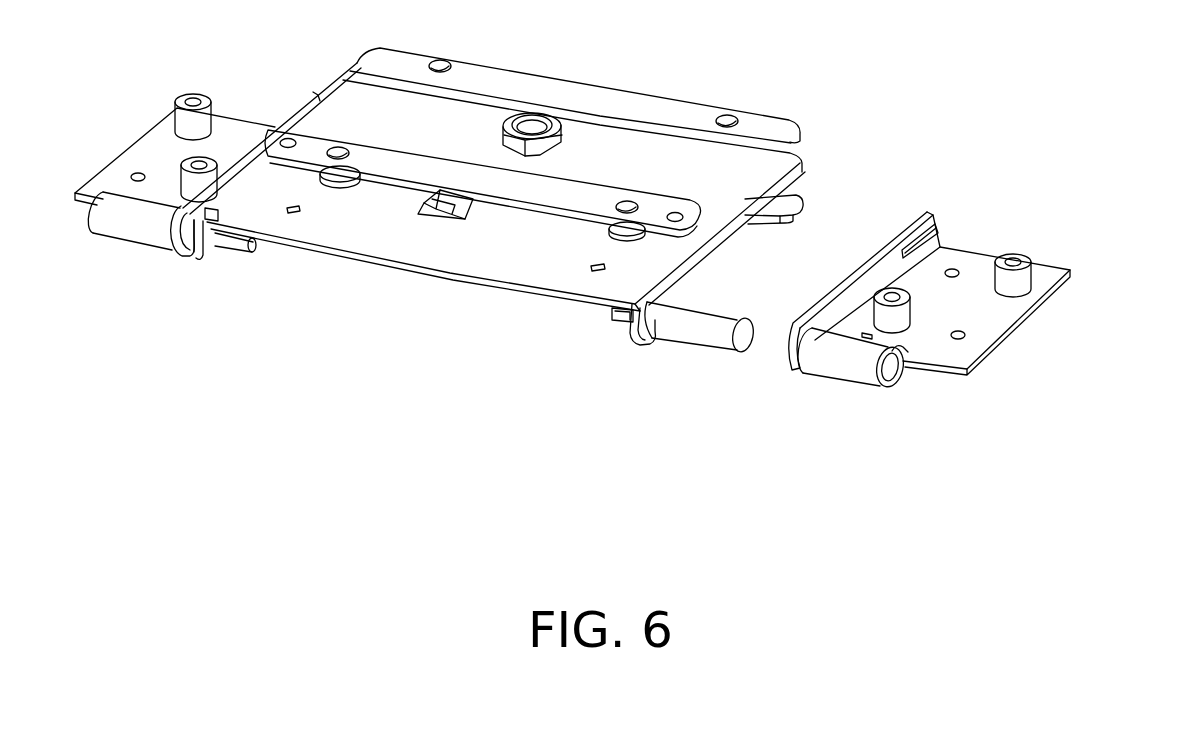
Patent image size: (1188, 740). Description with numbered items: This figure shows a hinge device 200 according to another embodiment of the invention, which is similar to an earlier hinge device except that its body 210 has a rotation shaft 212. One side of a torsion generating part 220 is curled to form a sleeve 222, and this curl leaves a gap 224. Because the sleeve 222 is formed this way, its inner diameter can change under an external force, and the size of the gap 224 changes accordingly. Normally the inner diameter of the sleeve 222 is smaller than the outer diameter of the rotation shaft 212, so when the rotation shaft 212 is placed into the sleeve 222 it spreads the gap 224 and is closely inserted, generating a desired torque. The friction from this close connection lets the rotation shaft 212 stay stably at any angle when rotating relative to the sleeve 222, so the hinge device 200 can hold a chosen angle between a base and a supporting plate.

The hinge device 200 is at (1154, 530).
The body 210 is at (528, 261).
The rotation shaft 212 is at (718, 337).
The torsion generating part 220 is at (150, 153).
The sleeve 222 is at (838, 355).
The gap 224 is at (899, 351).